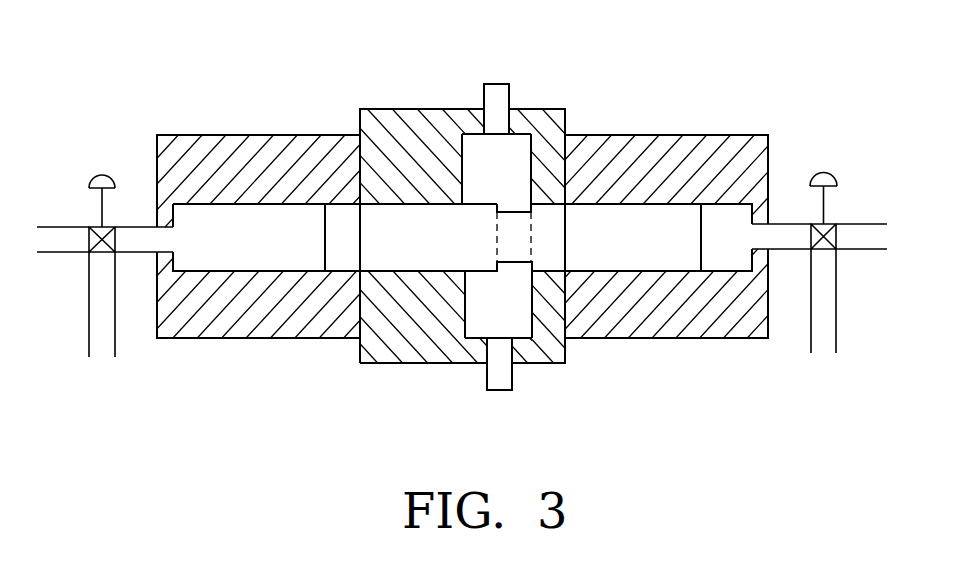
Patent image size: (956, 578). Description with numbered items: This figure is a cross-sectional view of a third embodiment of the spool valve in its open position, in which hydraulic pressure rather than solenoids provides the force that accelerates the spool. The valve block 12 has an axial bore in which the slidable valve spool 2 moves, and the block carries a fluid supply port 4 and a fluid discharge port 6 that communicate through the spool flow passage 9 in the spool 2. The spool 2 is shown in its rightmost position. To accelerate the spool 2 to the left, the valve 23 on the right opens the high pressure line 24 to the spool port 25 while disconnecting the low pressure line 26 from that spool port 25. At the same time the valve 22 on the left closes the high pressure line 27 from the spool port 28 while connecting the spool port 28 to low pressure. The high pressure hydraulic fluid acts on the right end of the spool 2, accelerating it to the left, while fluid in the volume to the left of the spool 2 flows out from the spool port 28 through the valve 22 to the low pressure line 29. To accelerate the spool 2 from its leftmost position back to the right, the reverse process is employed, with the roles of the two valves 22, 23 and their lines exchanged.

The valve spool 2 is at (630, 255).
The fluid supply port 4 is at (500, 382).
The fluid discharge port 6 is at (498, 93).
The spool flow passage 9 is at (510, 207).
The valve block 12 is at (543, 132).
The valve 22 is at (98, 176).
The valve 23 is at (820, 167).
The high pressure line 24 is at (875, 232).
The spool port 25 is at (760, 235).
The low pressure line 26 is at (823, 342).
The high pressure line 27 is at (60, 240).
The spool port 28 is at (145, 235).
The low pressure line 29 is at (102, 342).